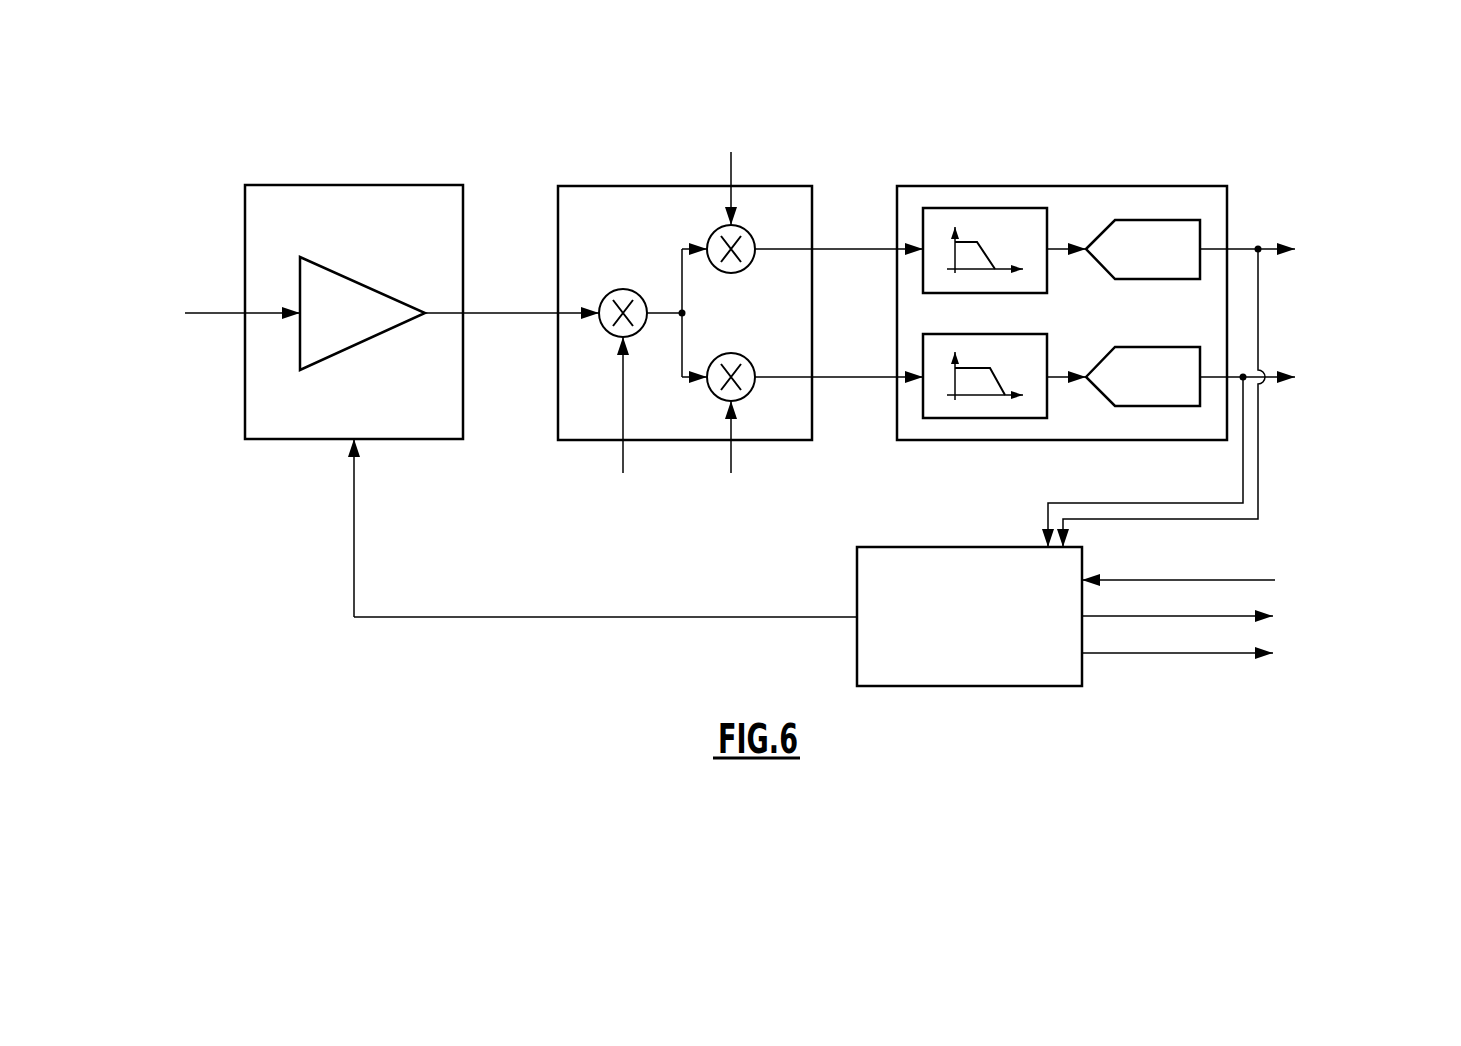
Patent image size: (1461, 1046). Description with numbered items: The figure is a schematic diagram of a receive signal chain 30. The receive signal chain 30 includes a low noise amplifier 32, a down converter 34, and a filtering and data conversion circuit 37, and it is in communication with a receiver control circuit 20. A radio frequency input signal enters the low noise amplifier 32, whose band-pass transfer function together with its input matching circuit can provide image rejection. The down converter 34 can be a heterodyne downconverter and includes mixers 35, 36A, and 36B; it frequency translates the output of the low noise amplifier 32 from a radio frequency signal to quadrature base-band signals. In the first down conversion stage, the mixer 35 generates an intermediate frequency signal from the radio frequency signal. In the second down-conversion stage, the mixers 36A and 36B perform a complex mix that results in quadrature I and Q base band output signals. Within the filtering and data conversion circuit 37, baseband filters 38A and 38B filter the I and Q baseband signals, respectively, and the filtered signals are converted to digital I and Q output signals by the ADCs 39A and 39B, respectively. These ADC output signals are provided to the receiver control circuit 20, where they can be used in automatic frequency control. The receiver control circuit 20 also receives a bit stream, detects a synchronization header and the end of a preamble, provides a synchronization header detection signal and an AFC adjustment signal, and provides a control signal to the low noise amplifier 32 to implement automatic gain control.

The receive signal chain 30 is at (752, 369).
The low noise amplifier 32 is at (341, 185).
The down converter 34 is at (634, 186).
The mixer 35 is at (608, 293).
The mixer 36A is at (745, 230).
The mixer 36B is at (745, 397).
The filtering and data conversion circuit 37 is at (1068, 186).
The baseband filter 38A is at (1015, 208).
The baseband filter 38B is at (1015, 418).
The ADC 39A is at (1143, 220).
The ADC 39B is at (1143, 406).
The receiver control circuit 20 is at (1074, 680).